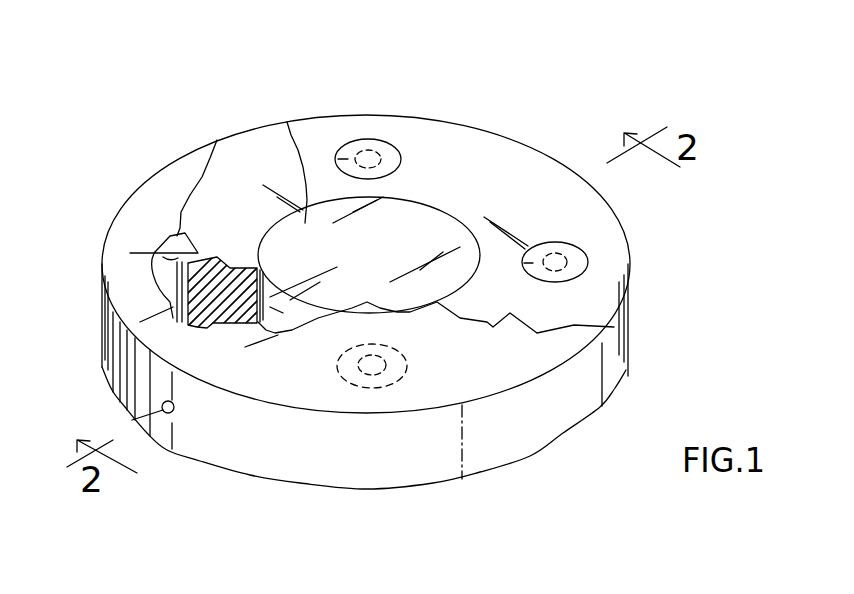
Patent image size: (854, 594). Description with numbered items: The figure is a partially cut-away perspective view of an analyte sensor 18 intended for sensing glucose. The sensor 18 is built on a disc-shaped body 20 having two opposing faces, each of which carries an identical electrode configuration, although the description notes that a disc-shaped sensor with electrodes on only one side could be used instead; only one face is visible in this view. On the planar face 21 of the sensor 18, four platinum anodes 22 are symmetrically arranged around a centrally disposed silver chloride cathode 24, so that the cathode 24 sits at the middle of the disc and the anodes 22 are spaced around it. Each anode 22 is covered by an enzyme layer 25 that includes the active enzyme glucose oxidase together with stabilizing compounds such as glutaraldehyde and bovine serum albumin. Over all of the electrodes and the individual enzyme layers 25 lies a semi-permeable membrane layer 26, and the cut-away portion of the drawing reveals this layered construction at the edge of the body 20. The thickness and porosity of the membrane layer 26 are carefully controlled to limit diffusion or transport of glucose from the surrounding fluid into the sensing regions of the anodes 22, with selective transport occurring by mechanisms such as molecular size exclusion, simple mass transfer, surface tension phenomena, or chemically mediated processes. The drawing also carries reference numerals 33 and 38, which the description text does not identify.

The sensor 18 is at (126, 114).
The disc-shaped body 20 is at (607, 363).
The planar face 21 is at (527, 361).
The platinum anode 22 is at (87, 272).
The silver chloride cathode 24 is at (287, 122).
The enzyme layer 25 is at (362, 147).
The semi-permeable membrane layer 26 is at (123, 302).
The radial bore 33 is at (140, 418).
The locating pin 38 is at (136, 427).